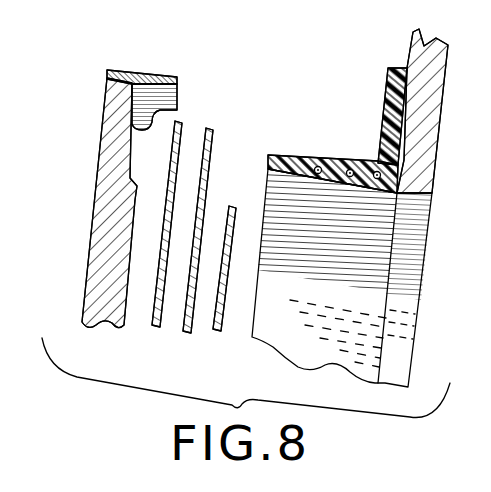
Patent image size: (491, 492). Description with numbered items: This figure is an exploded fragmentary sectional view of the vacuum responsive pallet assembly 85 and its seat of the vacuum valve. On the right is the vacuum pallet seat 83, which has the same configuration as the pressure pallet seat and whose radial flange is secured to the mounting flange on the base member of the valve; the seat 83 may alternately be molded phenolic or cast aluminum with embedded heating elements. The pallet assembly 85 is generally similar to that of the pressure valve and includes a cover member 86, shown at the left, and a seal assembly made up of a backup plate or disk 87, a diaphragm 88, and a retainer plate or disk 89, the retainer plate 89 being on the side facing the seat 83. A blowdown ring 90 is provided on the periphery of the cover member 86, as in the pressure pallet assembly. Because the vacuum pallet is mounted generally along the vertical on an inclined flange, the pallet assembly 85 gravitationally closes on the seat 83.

The vacuum pallet seat 83 is at (337, 157).
The pallet assembly 85 is at (88, 170).
The cover member 86 is at (105, 282).
The backup plate or disk 87 is at (179, 120).
The diaphragm 88 is at (209, 127).
The retainer plate or disk 89 is at (233, 206).
The blowdown ring 90 is at (143, 75).